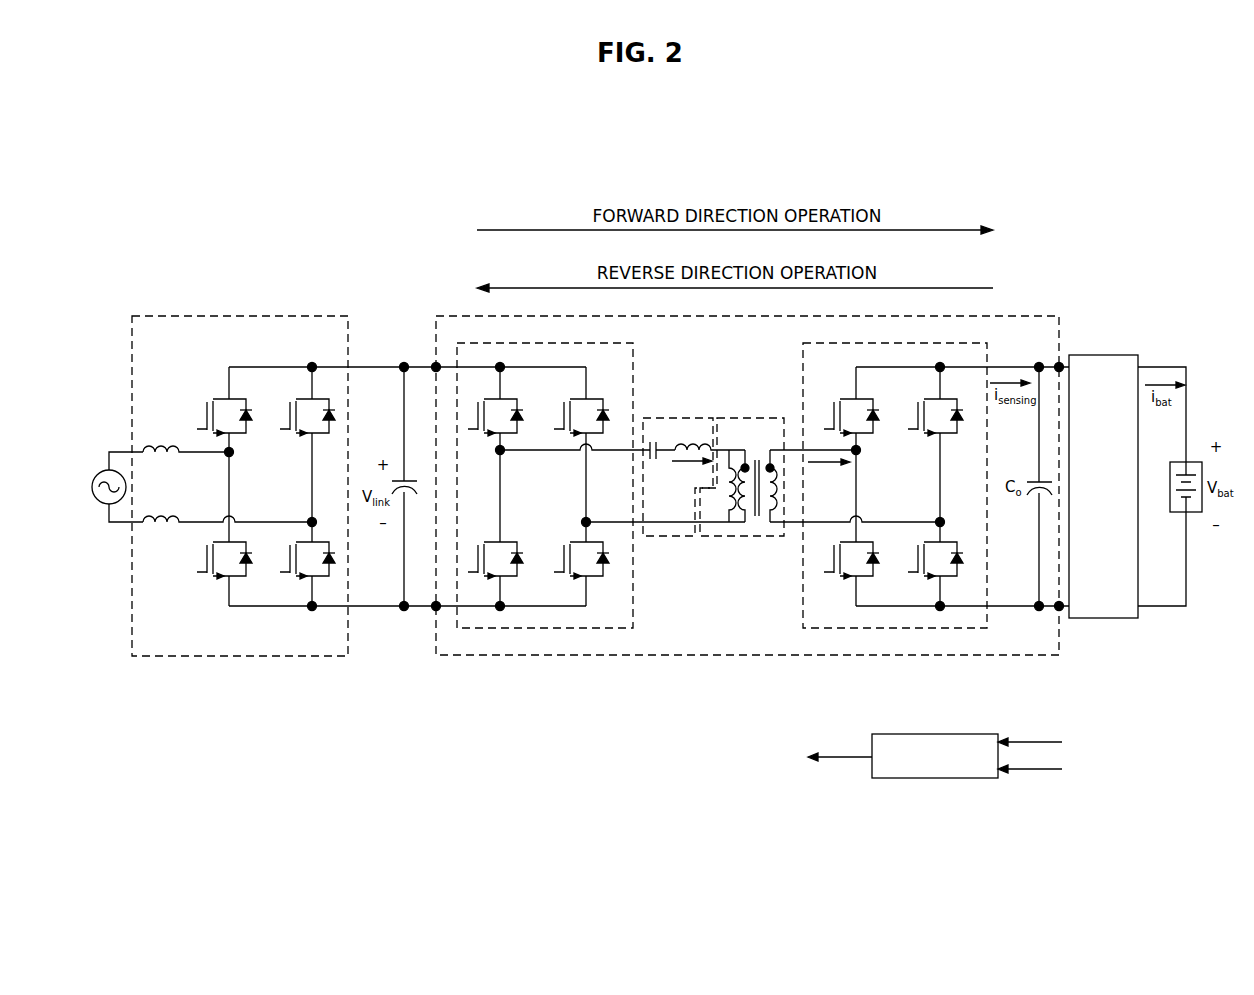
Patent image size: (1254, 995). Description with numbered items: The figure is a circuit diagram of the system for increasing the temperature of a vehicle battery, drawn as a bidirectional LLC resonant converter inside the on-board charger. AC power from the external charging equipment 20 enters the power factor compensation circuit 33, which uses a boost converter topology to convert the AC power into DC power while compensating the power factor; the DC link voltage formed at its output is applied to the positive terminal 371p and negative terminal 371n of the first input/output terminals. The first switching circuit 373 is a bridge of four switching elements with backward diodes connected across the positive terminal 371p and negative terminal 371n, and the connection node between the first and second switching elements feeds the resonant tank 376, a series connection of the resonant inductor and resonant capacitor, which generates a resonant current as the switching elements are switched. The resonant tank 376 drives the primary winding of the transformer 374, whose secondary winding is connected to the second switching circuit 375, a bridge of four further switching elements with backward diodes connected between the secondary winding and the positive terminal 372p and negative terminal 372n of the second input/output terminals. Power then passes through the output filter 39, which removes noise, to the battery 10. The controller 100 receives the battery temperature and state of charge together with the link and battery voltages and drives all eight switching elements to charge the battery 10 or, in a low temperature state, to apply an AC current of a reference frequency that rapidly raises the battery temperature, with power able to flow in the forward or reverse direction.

The battery 10 is at (1190, 460).
The external charging equipment 20 is at (100, 503).
The power factor compensation circuit 33 is at (250, 316).
The output filter 39 is at (1133, 355).
The controller 100 is at (970, 734).
The positive terminal of first input/output terminals 371p is at (436, 367).
The negative terminal of first input/output terminals 371n is at (436, 606).
The positive terminal of second input/output terminals 372p is at (1059, 367).
The negative terminal of second input/output terminals 372n is at (1059, 606).
The first switching circuit 373 is at (555, 628).
The transformer 374 is at (757, 536).
The second switching circuit 375 is at (911, 628).
The resonant tank 376 is at (678, 536).